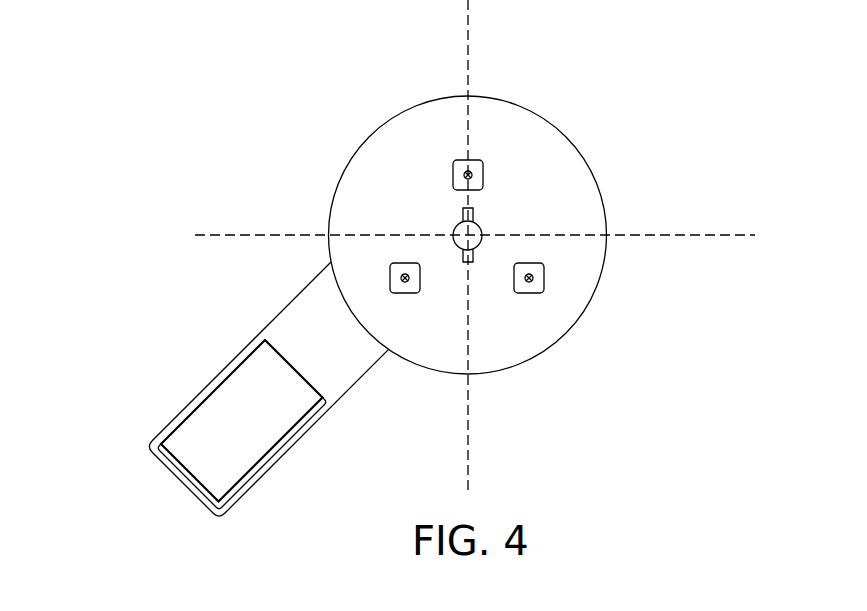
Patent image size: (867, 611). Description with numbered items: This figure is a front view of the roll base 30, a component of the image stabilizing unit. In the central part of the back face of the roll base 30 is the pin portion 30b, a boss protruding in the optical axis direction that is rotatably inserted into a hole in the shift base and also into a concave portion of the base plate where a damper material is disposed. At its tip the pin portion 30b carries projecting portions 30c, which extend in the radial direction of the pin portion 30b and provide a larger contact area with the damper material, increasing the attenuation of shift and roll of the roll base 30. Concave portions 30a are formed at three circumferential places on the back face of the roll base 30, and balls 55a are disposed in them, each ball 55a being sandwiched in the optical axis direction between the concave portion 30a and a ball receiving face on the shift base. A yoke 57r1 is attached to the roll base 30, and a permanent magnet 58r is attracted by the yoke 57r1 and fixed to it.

The roll base 30 is at (287, 318).
The concave portion 30a is at (484, 172).
The pin portion 30b is at (478, 228).
The projecting portion 30c is at (462, 213).
The ball 55a is at (462, 170).
The permanent magnet 58r is at (172, 443).
The yoke 57r1 is at (168, 458).